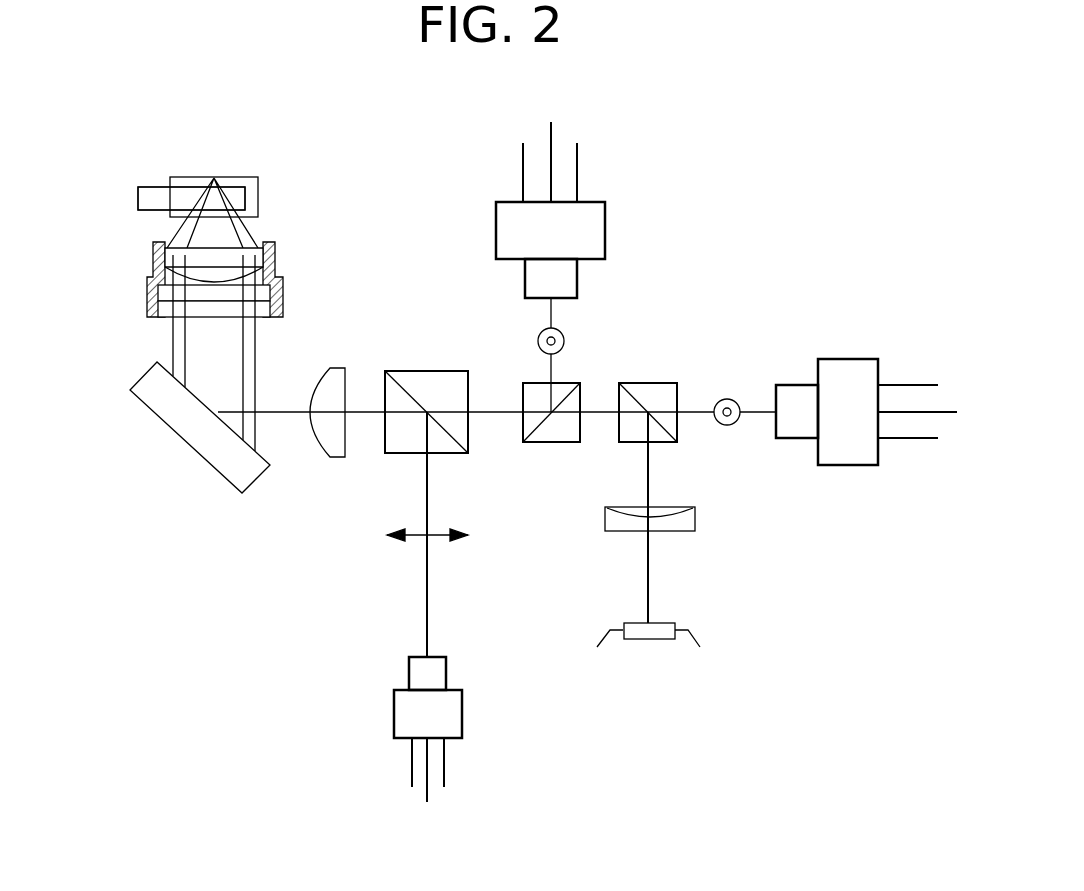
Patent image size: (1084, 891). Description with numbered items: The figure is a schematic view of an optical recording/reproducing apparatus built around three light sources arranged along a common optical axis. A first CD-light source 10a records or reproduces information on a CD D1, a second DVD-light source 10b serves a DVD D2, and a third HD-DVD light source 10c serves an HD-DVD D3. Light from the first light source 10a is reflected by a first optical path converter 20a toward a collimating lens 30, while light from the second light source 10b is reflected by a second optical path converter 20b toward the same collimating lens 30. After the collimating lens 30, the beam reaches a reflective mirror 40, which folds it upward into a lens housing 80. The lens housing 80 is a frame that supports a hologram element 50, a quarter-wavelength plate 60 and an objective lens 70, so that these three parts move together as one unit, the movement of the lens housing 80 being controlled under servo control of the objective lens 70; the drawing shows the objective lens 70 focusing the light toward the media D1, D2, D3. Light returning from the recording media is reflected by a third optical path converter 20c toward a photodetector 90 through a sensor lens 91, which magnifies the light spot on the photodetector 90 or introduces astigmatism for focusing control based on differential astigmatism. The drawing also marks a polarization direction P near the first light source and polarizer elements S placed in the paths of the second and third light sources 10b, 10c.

The CD D1 is at (185, 176).
The DVD D2 is at (138, 196).
The HD-DVD D3 is at (191, 198).
The lens housing 80 is at (275, 252).
The objective lens 70 is at (253, 239).
The λ/4 wavelength plate 60 is at (284, 296).
The hologram element 50 is at (262, 318).
The reflective mirror 40 is at (184, 445).
The collimating lens 30 is at (334, 459).
The first optical path converter 20a is at (450, 454).
The second optical path converter 20b is at (550, 443).
The third optical path converter 20c is at (640, 443).
The polarizer S is at (538, 338).
The first CD-light source 10a is at (394, 712).
The second DVD-light source 10b is at (605, 228).
The third HD-DVD light source 10c is at (847, 466).
The sensor lens 91 is at (697, 518).
The photodetector 90 is at (663, 622).
The polarization direction P is at (417, 540).